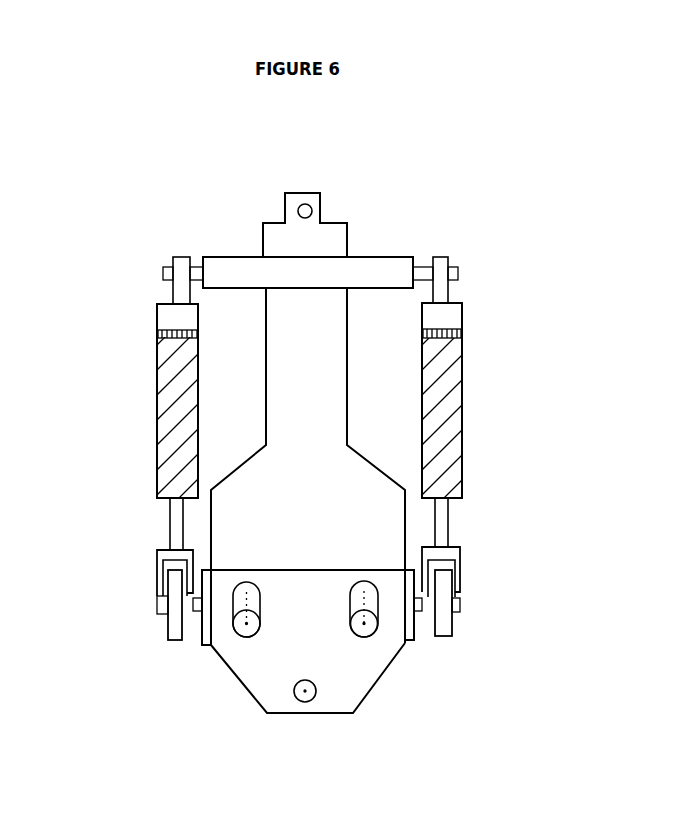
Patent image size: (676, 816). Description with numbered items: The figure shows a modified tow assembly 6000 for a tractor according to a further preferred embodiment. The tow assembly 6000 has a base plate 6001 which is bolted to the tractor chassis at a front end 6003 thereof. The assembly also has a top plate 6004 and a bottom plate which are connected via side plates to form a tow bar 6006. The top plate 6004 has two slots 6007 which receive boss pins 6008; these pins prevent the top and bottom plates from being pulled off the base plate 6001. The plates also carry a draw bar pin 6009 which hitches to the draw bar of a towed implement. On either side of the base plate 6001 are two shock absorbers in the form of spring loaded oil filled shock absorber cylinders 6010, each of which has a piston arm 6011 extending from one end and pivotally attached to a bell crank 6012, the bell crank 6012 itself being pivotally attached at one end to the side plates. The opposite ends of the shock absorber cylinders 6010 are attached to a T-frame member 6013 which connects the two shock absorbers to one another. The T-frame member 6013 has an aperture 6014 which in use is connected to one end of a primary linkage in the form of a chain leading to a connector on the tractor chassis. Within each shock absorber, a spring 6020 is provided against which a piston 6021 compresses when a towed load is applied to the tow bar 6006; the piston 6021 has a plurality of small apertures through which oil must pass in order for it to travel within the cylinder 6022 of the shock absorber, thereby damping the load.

The tow assembly 6000 is at (424, 122).
The base plate 6001 is at (317, 340).
The front end 6003 is at (352, 229).
The top plate 6004 is at (318, 623).
The tow bar 6006 is at (425, 704).
The slots 6007 is at (353, 592).
The boss pins 6008 is at (364, 636).
The draw bar pin 6009 is at (305, 702).
The shock absorber cylinders 6010 is at (148, 385).
The piston arm 6011 is at (177, 525).
The bell crank 6012 is at (177, 627).
The T-frame member 6013 is at (237, 270).
The aperture 6014 is at (305, 204).
The spring 6020 is at (183, 435).
The piston 6021 is at (175, 323).
The cylinder 6022 is at (158, 442).